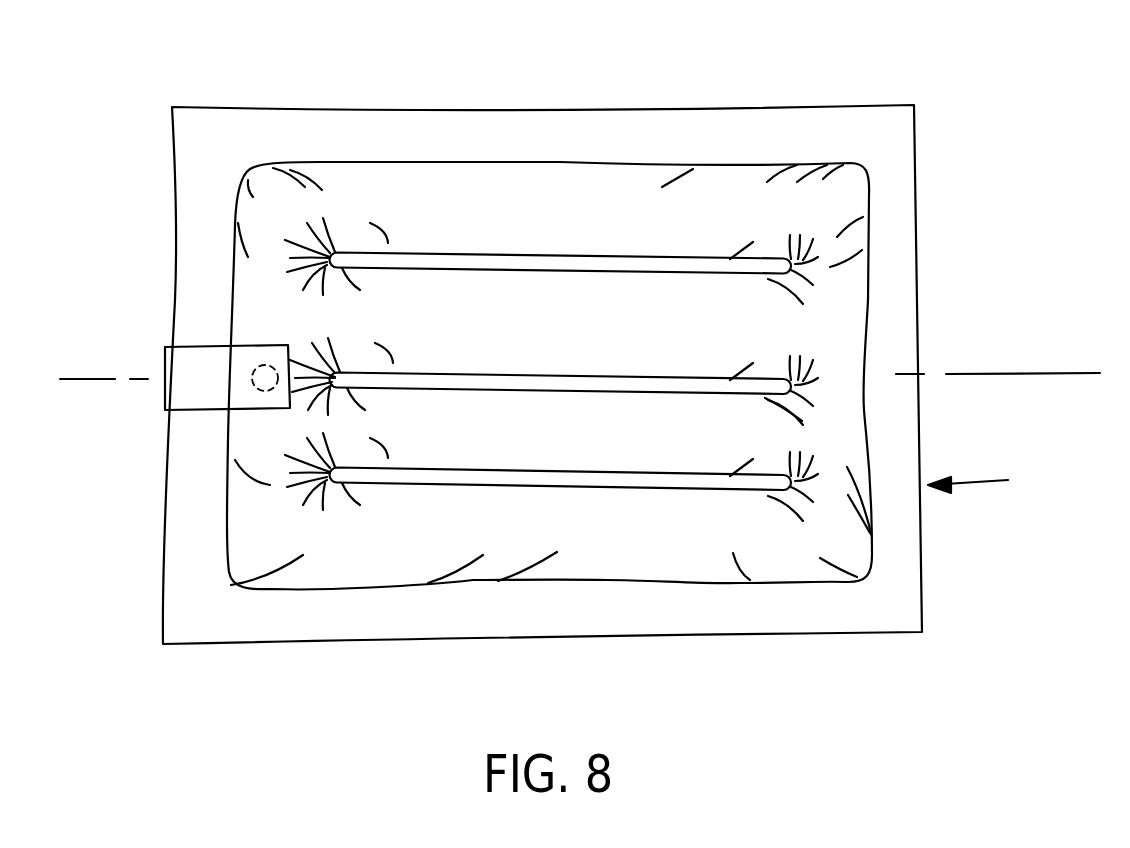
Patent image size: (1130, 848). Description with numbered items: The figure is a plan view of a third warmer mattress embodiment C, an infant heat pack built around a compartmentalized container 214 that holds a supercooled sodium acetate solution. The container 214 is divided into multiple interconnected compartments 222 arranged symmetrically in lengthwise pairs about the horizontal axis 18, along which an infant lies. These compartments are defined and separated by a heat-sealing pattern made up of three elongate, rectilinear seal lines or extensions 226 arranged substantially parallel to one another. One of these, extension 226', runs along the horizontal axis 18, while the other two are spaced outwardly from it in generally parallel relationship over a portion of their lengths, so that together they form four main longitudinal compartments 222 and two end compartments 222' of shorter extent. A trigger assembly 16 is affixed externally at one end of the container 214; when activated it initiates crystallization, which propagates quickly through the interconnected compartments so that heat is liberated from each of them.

The compartmentalized container 214 is at (915, 212).
The interconnected compartments 222 is at (565, 383).
The end compartments 222' is at (532, 512).
The seal lines or extensions 226 is at (554, 367).
The central seal extension 226' is at (893, 365).
The trigger assembly 16 is at (200, 417).
The horizontal axis 18 is at (112, 379).
The warmer mattress embodiment C is at (981, 484).